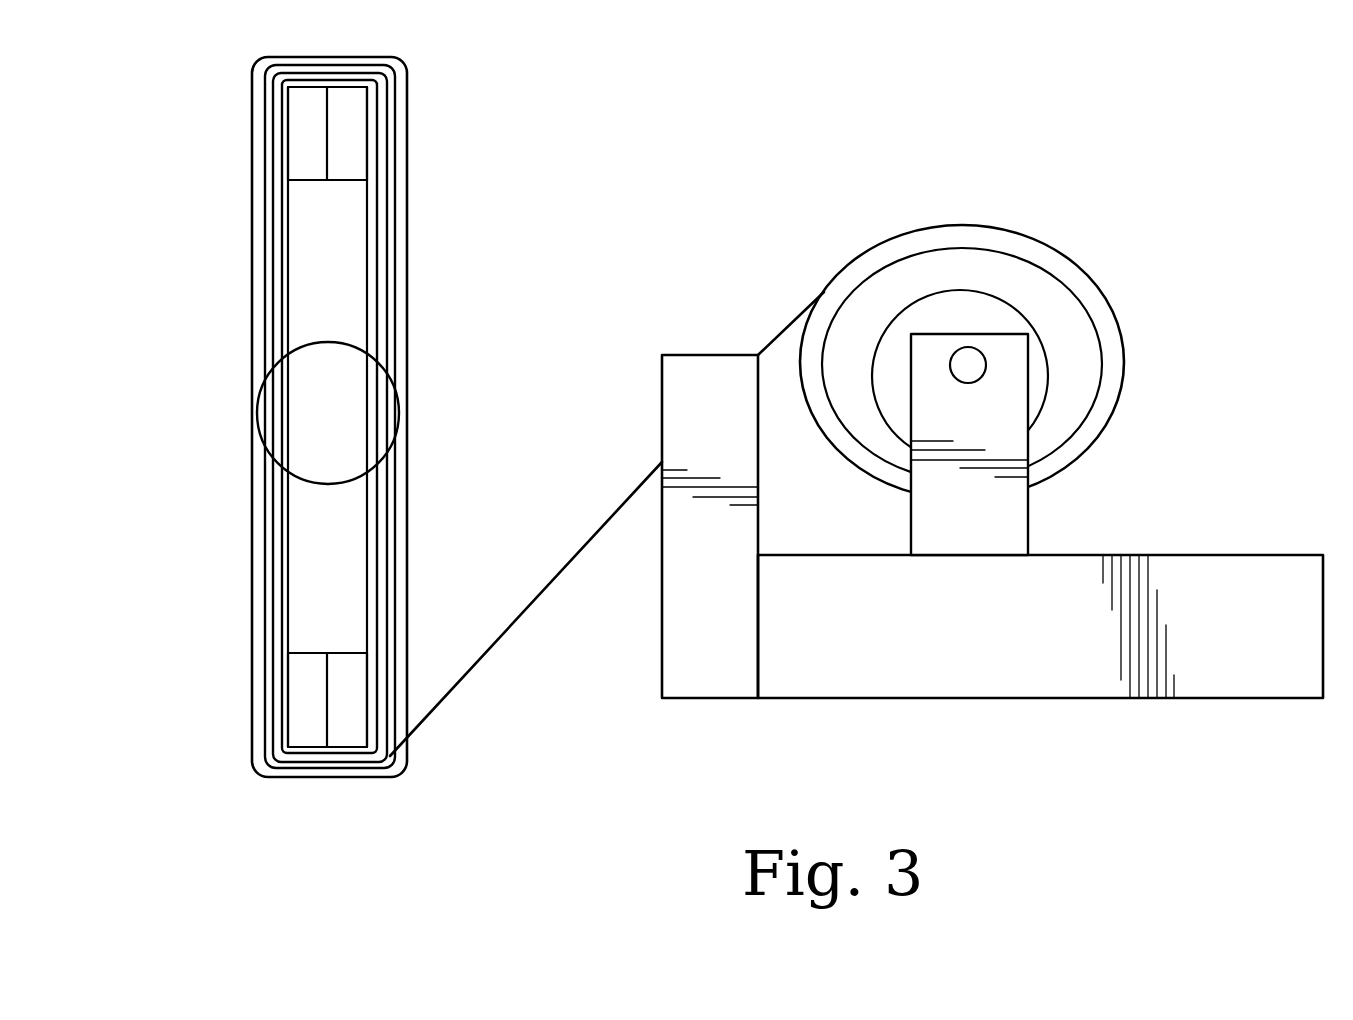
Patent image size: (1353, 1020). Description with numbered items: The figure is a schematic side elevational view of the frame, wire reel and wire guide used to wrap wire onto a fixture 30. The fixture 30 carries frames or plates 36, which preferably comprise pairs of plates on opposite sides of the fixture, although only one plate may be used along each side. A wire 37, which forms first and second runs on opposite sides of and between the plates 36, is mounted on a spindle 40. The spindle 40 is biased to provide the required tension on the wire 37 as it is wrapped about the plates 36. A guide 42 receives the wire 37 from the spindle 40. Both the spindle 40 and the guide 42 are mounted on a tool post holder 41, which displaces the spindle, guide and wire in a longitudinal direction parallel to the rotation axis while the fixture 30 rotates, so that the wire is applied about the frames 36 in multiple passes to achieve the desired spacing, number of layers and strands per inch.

The fixture 30 is at (335, 555).
The frames or plates 36 is at (310, 114).
The wire 37 is at (630, 493).
The spindle 40 is at (903, 243).
The tool post holder 41 is at (822, 683).
The guide 42 is at (707, 367).